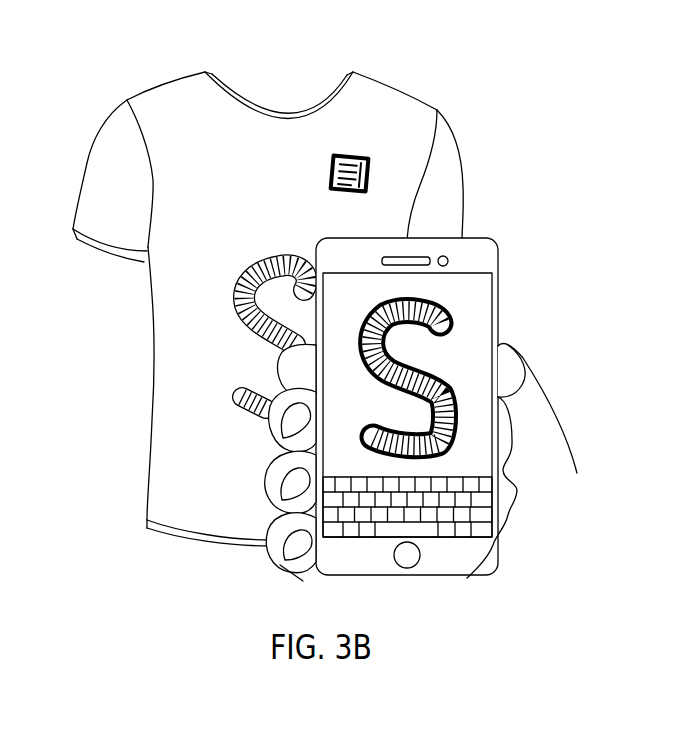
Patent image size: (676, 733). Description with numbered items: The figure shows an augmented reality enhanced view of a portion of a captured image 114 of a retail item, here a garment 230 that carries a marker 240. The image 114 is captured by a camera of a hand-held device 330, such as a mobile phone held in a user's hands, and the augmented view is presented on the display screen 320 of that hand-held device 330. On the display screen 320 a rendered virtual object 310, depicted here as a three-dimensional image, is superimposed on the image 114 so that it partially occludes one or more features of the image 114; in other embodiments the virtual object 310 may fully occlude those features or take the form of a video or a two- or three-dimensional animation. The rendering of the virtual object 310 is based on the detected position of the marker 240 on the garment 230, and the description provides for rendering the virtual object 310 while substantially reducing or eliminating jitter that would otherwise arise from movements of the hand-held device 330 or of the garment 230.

The garment 230 is at (163, 110).
The marker 240 is at (357, 157).
The image 114 is at (393, 406).
The rendered virtual object 310 is at (360, 330).
The display screen 320 is at (343, 460).
The hand-held device 330 is at (466, 557).